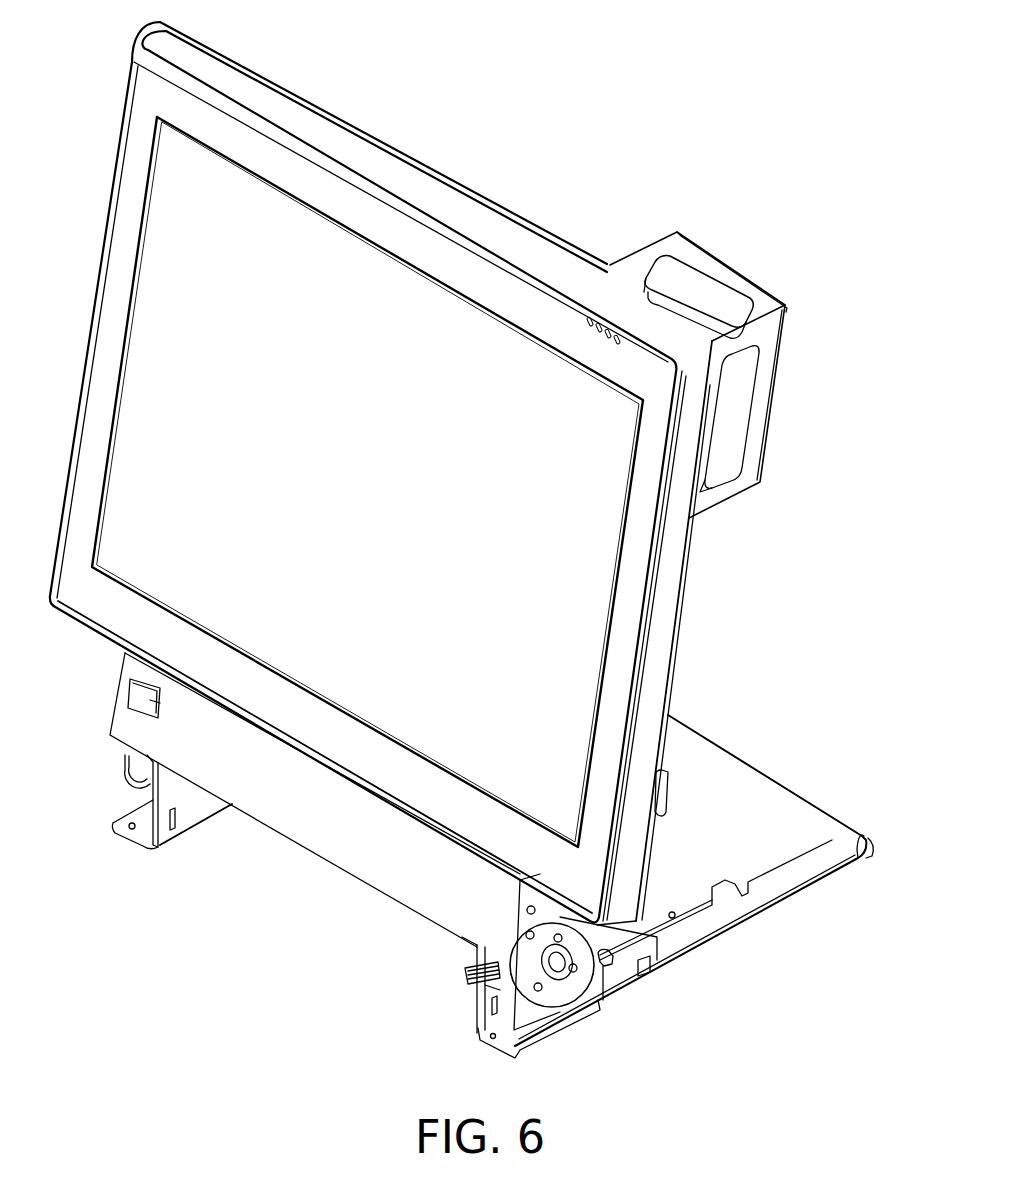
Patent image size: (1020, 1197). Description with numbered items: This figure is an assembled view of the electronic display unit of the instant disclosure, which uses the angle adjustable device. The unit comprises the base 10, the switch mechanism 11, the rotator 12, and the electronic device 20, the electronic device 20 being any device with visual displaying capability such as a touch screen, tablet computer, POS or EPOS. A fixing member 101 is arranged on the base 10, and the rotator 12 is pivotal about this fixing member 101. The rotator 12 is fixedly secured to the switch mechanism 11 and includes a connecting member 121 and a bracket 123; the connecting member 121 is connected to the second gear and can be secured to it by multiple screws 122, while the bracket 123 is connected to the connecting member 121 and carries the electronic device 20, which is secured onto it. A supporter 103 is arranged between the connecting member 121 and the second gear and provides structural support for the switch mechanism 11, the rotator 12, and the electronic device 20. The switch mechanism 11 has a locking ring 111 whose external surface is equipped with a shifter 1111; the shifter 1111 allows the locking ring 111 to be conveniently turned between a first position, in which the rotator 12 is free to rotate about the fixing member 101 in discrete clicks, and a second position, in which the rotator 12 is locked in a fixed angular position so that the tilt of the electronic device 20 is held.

The base 10 is at (770, 813).
The electronic device 20 is at (667, 564).
The switch mechanism 11 is at (357, 932).
The locking ring 111 is at (500, 988).
The shifter 1111 is at (480, 962).
The fixing member 101 is at (487, 1017).
The supporter 103 is at (535, 1020).
The rotator 12 is at (767, 942).
The connecting member 121 is at (614, 960).
The screws 122 is at (576, 972).
The bracket 123 is at (588, 942).